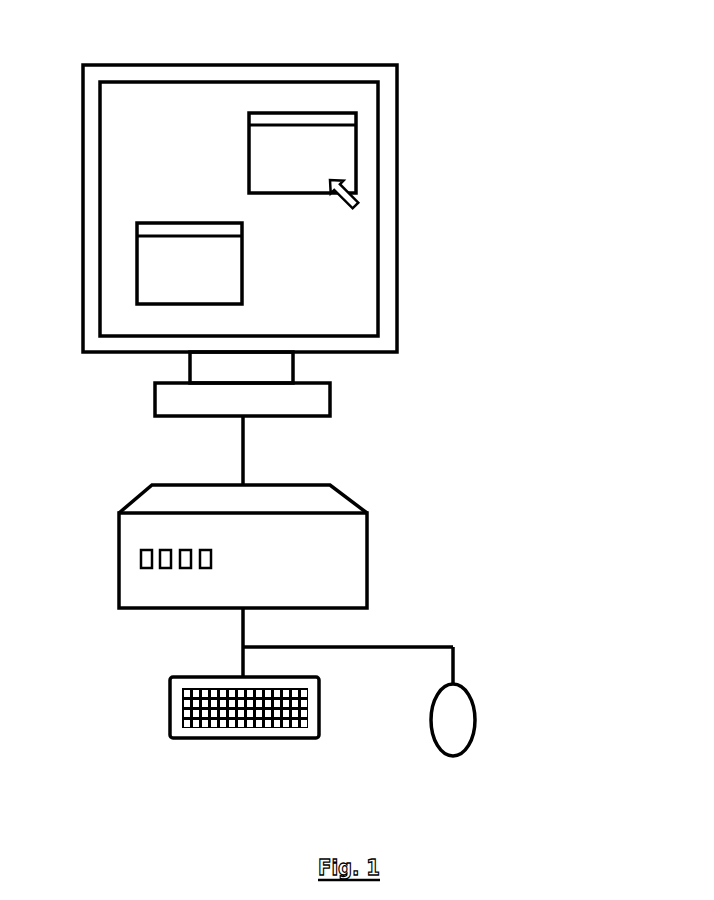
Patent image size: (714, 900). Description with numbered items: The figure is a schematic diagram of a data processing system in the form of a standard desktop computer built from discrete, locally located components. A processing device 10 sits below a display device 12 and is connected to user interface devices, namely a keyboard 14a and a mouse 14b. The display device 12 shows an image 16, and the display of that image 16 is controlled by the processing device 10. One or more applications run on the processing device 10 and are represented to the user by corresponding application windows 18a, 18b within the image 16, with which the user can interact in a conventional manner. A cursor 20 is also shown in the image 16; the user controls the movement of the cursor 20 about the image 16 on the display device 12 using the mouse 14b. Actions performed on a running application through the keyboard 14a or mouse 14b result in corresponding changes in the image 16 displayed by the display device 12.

The processing device 10 is at (118, 588).
The display device 12 is at (218, 65).
The keyboard 14a is at (170, 714).
The mouse 14b is at (475, 706).
The image 16 is at (134, 320).
The application window 18a is at (248, 160).
The application window 18b is at (243, 263).
The cursor 20 is at (358, 195).